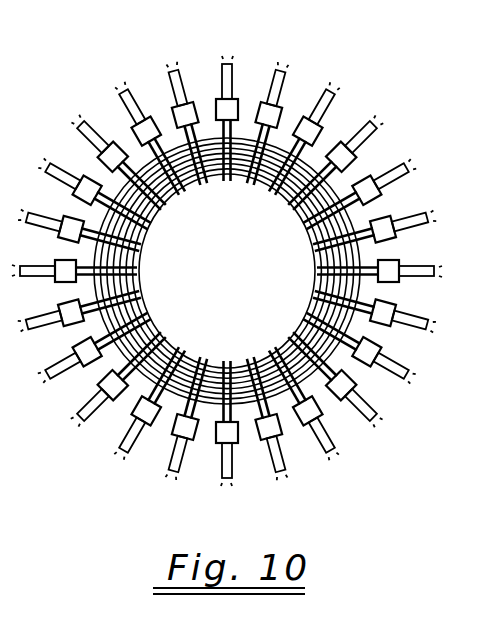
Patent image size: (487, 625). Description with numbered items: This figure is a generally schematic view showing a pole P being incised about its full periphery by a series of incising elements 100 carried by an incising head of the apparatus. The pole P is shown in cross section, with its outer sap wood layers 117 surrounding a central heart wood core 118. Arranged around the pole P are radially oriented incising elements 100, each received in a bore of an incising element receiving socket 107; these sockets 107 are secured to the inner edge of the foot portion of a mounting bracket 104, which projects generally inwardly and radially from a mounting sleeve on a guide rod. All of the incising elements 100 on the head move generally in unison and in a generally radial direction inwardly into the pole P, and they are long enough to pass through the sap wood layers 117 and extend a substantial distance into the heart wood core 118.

The incising element 100 is at (138, 293).
The mounting bracket 104 is at (94, 399).
The incising element receiving socket 107 is at (119, 145).
The outer sap wood layers 117 is at (158, 340).
The heart wood core 118 is at (247, 306).
The pole P is at (279, 402).